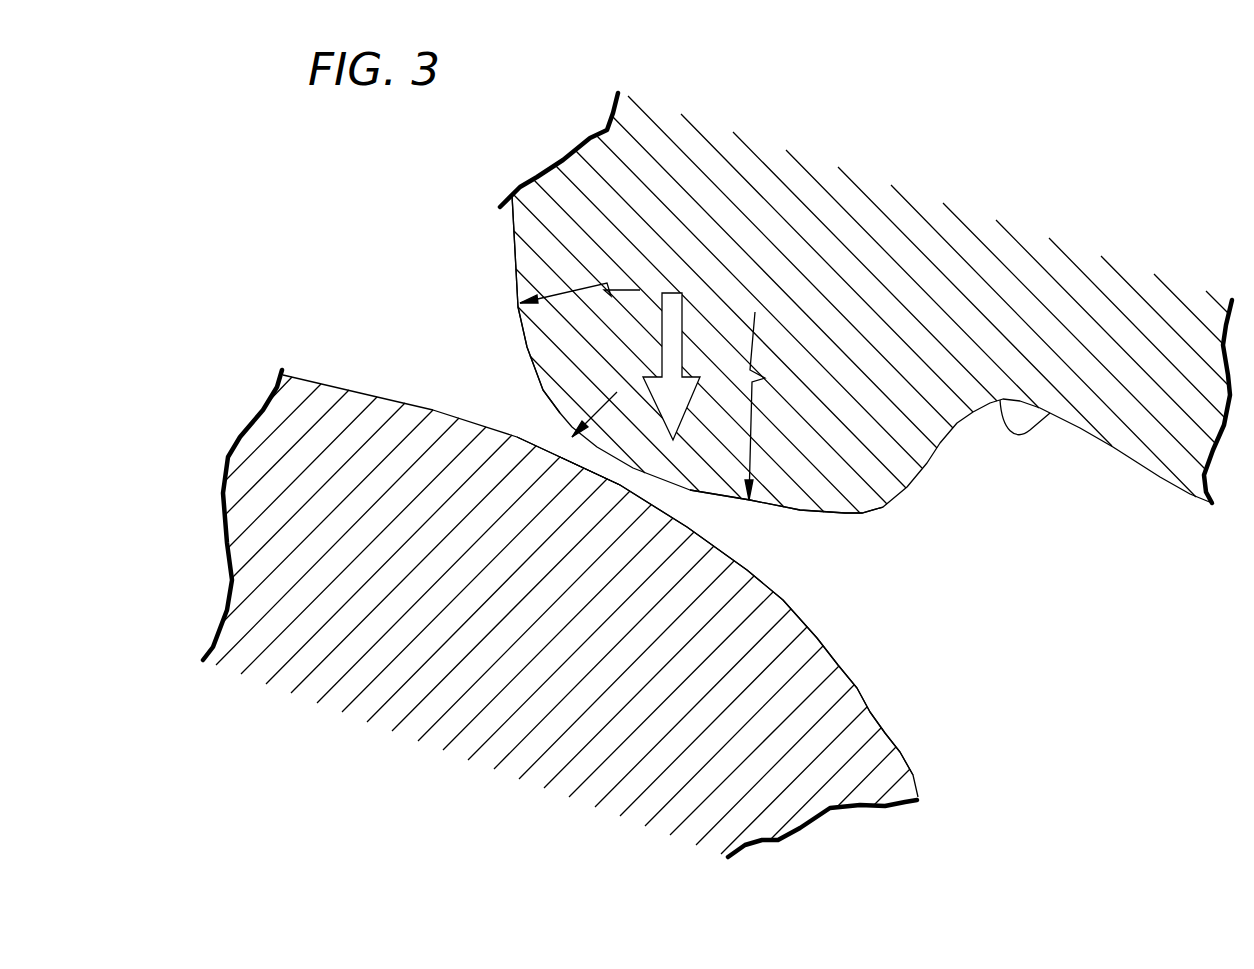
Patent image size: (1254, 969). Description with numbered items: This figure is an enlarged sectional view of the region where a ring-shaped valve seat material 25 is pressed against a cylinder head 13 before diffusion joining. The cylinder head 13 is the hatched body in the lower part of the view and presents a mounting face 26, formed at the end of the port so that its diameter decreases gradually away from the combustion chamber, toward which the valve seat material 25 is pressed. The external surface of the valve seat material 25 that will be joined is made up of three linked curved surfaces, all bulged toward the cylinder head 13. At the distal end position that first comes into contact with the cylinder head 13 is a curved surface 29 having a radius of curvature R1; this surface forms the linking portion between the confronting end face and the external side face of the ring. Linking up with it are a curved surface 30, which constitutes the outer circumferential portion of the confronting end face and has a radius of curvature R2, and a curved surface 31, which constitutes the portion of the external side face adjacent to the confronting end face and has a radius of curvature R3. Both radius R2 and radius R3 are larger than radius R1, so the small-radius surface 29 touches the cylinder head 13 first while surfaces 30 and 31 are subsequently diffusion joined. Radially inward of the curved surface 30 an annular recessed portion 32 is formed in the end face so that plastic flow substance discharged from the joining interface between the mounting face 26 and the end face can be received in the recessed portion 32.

The cylinder head 13 is at (807, 777).
The valve seat material 25 is at (858, 222).
The mounting face 26 is at (817, 635).
The curved surface 29 is at (578, 450).
The curved surface 30 is at (773, 507).
The curved surface 31 is at (517, 288).
The annular recessed portion 32 is at (1048, 417).
The radius of curvature R1 is at (591, 403).
The radius of curvature R2 is at (776, 406).
The radius of curvature R3 is at (580, 275).